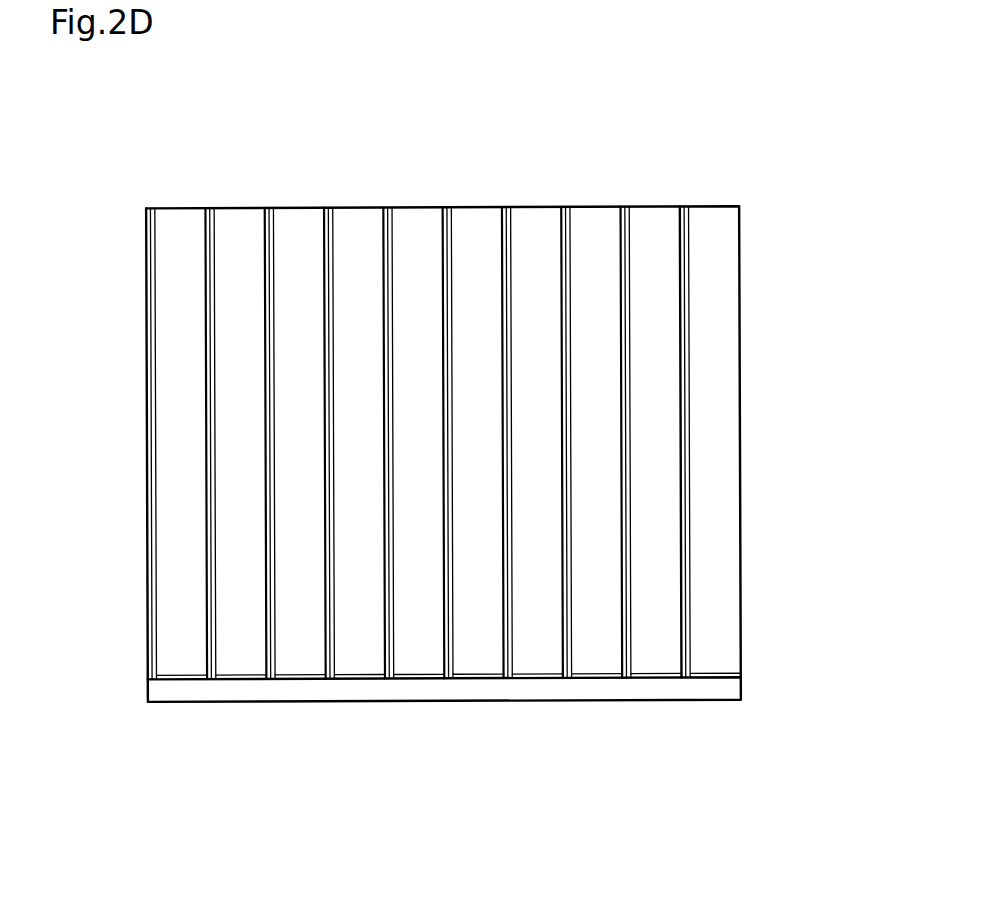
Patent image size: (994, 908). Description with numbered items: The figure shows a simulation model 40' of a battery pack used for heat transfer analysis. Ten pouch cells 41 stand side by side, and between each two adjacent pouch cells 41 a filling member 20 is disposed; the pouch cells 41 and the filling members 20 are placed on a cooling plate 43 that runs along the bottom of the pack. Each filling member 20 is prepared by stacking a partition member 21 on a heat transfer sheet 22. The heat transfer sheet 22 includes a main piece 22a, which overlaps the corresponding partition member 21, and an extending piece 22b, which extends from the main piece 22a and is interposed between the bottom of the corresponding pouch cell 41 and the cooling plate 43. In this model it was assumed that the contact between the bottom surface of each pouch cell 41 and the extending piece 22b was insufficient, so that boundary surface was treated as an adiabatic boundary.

The filling member 20 is at (156, 194).
The partition member 21 is at (139, 326).
The heat transfer sheet 22 is at (166, 380).
The main piece 22a is at (160, 529).
The extending piece 22b is at (182, 673).
The simulation model 40' is at (523, 421).
The pouch cell 41 is at (177, 218).
The cooling plate 43 is at (528, 699).